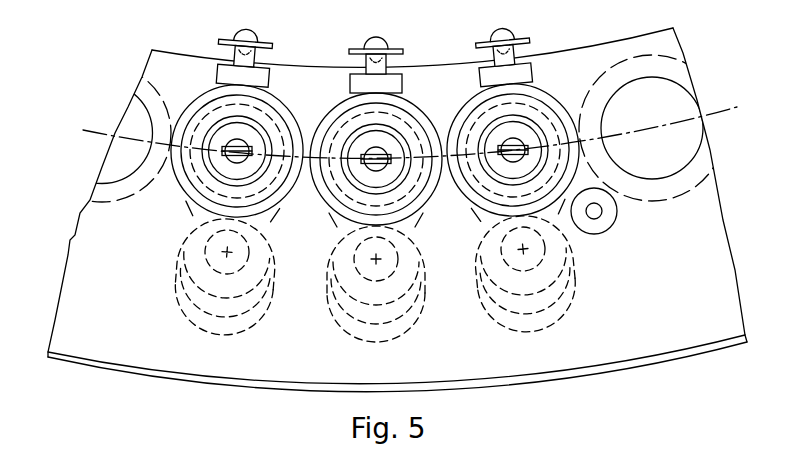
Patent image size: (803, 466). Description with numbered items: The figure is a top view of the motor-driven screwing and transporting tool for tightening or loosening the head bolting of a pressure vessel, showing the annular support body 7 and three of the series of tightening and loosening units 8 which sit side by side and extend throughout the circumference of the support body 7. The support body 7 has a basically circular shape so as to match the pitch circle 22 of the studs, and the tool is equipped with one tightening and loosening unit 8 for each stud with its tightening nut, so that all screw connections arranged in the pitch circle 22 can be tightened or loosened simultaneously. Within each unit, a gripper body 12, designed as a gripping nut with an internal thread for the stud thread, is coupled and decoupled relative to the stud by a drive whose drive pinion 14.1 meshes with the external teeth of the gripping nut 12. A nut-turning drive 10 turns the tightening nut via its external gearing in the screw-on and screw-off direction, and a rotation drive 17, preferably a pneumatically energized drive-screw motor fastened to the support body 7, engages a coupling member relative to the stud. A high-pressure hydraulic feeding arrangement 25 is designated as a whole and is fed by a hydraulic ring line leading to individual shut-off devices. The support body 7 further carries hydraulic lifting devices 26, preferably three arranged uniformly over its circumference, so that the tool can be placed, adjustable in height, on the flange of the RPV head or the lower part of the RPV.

The annular support body 7 is at (285, 68).
The tightening and loosening unit 8 is at (206, 90).
The gripper body 12 is at (202, 118).
The pitch circle 22 is at (363, 157).
The high-pressure hydraulic feeding arrangement 25 is at (249, 32).
The hydraulic lifting device 26 is at (610, 213).
The drive pinion 14.1 is at (268, 237).
The rotation drive 17 is at (186, 286).
The nut-turning drive 10 is at (190, 314).